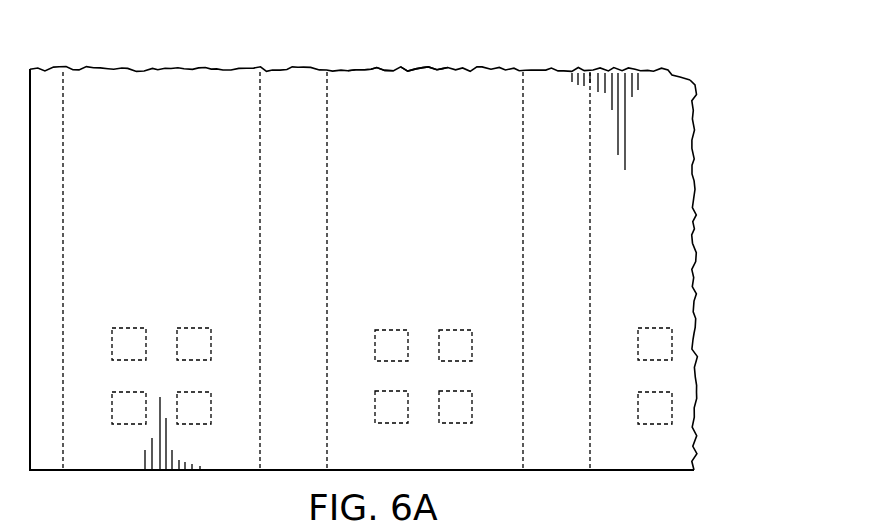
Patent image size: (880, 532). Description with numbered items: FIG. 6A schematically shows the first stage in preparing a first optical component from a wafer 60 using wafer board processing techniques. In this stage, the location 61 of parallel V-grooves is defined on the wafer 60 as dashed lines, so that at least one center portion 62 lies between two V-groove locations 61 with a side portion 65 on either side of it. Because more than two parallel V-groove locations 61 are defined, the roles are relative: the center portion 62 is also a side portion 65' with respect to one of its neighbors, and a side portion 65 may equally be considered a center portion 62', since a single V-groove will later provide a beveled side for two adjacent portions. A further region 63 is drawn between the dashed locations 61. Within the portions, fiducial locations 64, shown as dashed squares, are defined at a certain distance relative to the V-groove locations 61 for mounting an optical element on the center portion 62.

The wafer 60 is at (722, 237).
The location of parallel V-grooves 61 is at (284, 84).
The center portion 62 is at (424, 59).
The center portion 62' is at (475, 244).
The region 63 is at (479, 86).
The fiducial location 64 is at (451, 338).
The side portion 65 is at (396, 244).
The side portion 65' is at (371, 52).